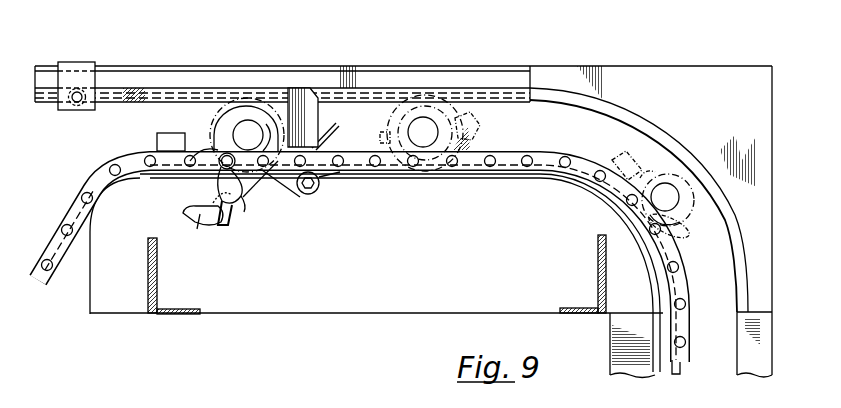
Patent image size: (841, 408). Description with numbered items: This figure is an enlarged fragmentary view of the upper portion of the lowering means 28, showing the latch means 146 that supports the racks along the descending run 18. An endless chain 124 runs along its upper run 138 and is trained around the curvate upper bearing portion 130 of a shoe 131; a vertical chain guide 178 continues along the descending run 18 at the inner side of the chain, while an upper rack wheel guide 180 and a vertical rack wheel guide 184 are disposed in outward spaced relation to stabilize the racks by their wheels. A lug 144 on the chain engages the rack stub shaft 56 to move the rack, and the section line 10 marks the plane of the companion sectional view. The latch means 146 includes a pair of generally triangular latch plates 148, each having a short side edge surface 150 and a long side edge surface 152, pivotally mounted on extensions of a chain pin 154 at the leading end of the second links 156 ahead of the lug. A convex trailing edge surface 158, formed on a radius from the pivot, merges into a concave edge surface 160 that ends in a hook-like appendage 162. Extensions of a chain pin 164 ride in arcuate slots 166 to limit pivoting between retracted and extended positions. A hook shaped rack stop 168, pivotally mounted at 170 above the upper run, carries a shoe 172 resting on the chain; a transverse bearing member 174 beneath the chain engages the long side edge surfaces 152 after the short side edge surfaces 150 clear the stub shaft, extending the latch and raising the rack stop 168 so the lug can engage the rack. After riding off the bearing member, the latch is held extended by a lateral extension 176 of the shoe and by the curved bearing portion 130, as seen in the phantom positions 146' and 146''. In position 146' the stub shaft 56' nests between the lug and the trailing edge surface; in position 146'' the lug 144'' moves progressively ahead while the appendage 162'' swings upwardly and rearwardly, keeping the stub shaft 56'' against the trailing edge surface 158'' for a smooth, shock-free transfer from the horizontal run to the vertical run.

The section line 10- 10 is at (358, 63).
The descending run 18 is at (702, 320).
The lowering means 28 is at (702, 381).
The rack stub shaft 56 is at (248, 81).
The rack stub shaft (phantom position) 56' is at (423, 92).
The rack stub shaft (phantom position) 56'' is at (685, 152).
The endless chain 124 is at (93, 176).
The curvate upper bearing portion 130 is at (603, 196).
The shoe 131 is at (243, 317).
The upper run 138 is at (84, 131).
The lug 144 is at (134, 146).
The lug (phantom position) 144'' is at (629, 129).
The latch means 146 is at (188, 250).
The latch means (phantom extended position) 146' is at (490, 81).
The latch means (phantom position rounding curve) 146'' is at (730, 226).
The latch plate 148 is at (221, 226).
The short side edge surface 150 is at (220, 156).
The long side edge surface 152 is at (250, 187).
The chain pin 154 is at (319, 188).
The chain link 156 is at (286, 158).
The convex trailing edge surface 158 is at (184, 185).
The convex trailing edge surface (phantom position) 158'' is at (711, 152).
The concave edge surface 160 is at (213, 204).
The hook-like appendage 162 is at (174, 225).
The hook-like appendage (phantom position) 162'' is at (665, 128).
The chain pin 164 is at (218, 158).
The arcuate slot 166 is at (245, 210).
The rack stop 168 is at (227, 99).
The pivot 170 is at (78, 92).
The shoe 172 is at (337, 125).
The bearing member 174 is at (320, 184).
The lateral extension 176 is at (502, 180).
The vertical chain guide 178 is at (663, 368).
The upper rack wheel guide 180 is at (593, 103).
The vertical rack wheel guide 184 is at (758, 355).